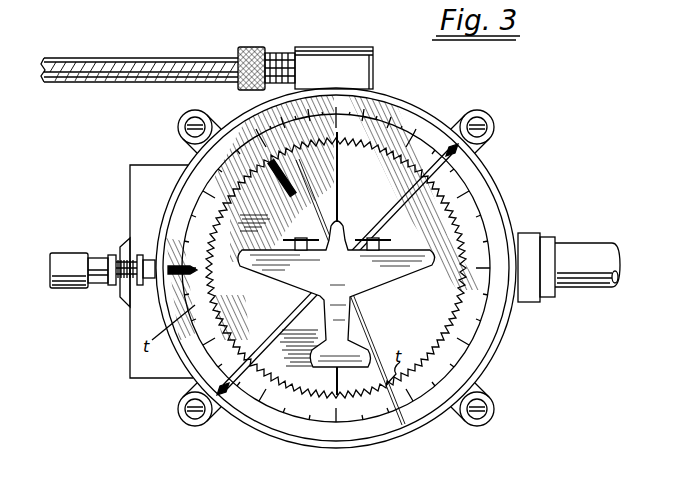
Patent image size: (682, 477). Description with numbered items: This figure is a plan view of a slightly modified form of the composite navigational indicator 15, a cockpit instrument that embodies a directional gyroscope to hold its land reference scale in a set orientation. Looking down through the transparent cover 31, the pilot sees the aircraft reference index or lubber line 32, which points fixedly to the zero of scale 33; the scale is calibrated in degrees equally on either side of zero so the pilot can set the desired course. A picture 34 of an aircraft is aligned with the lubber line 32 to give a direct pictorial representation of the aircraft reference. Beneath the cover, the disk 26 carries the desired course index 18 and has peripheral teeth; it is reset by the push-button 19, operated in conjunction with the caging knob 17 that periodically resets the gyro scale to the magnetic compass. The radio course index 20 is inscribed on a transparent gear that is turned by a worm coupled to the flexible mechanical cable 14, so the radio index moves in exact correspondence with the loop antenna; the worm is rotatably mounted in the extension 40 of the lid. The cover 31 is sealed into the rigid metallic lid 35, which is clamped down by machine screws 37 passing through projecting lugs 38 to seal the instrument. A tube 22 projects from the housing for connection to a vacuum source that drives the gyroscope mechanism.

The flexible mechanical cable 14 is at (103, 84).
The composite navigational indicator 15 is at (508, 352).
The caging knob 17 is at (60, 262).
The desired course index 18 is at (292, 188).
The push-button 19 is at (116, 300).
The radio course index 20 is at (462, 154).
The tube 22 is at (592, 250).
The disk 26 is at (442, 240).
The transparent cover 31 is at (440, 132).
The lubber line 32 is at (339, 170).
The scale 33 is at (401, 113).
The picture of an aircraft 34 is at (373, 287).
The rigid metallic lid 35 is at (506, 200).
The machine screws 37 is at (481, 120).
The projecting lugs 38 is at (178, 137).
The extension of lid 40 is at (362, 44).